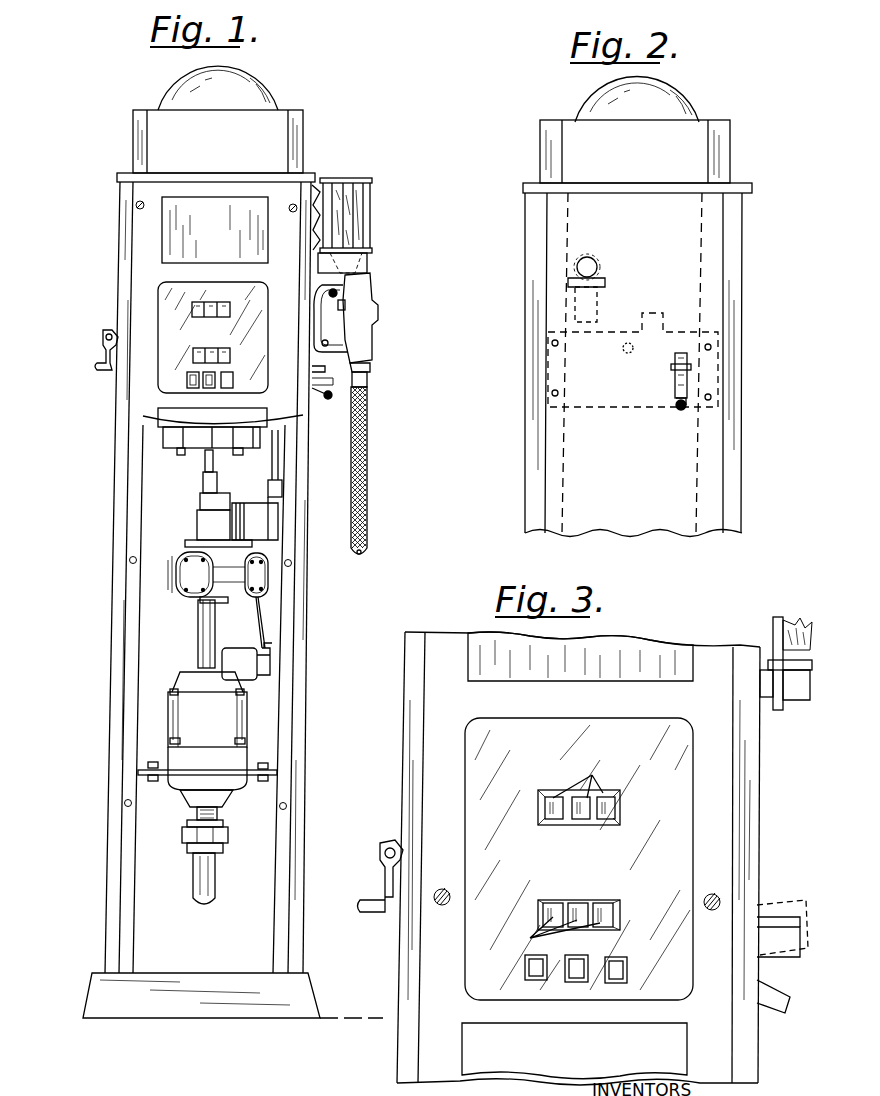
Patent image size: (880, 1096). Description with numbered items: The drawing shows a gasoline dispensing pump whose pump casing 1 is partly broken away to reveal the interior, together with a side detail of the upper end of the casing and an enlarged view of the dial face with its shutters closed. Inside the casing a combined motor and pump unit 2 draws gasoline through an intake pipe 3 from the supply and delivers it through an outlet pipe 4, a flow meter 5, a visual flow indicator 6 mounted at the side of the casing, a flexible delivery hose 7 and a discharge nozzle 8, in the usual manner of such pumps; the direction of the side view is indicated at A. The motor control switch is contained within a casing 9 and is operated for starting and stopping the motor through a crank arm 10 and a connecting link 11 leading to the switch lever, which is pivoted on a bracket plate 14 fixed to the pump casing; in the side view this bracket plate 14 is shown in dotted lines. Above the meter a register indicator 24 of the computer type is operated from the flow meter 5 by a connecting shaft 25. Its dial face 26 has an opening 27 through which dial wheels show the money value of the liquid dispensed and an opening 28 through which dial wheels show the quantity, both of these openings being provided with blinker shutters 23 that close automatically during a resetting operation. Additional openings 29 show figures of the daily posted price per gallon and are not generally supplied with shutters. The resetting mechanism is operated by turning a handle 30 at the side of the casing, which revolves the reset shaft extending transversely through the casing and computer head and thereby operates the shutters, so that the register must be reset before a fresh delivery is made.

In FIG. 1, the pump casing 1 is at (115, 500).
In FIG. 2, the pump casing 1 is at (548, 497).
In FIG. 3, the pump casing 1 is at (408, 980).
In FIG. 1, the combined motor and pump unit 2 is at (230, 748).
In FIG. 1, the intake pipe 3 is at (207, 885).
In FIG. 1, the outlet pipe 4 is at (200, 628).
In FIG. 1, the flow meter 5 is at (192, 565).
In FIG. 1, the visual flow indicator 6 is at (368, 218).
In FIG. 3, the visual flow indicator 6 is at (795, 623).
In FIG. 1, the flexible delivery hose 7 is at (367, 448).
In FIG. 1, the discharge nozzle 8 is at (358, 302).
In FIG. 1, the casing 9 is at (228, 652).
In FIG. 1, the crank arm 10 is at (263, 655).
In FIG. 1, the connecting link 11 is at (260, 612).
In FIG. 2, the bracket plate 14 is at (623, 408).
In FIG. 3, the blinker shutter 23 is at (578, 777).
In FIG. 1, the register indicator 24 is at (172, 440).
In FIG. 1, the connecting shaft 25 is at (205, 480).
In FIG. 1, the dial face 26 is at (170, 372).
In FIG. 3, the dial face 26 is at (478, 908).
In FIG. 1, the opening 27 is at (230, 310).
In FIG. 3, the opening 27 is at (620, 817).
In FIG. 1, the opening 28 is at (226, 348).
In FIG. 3, the opening 28 is at (620, 917).
In FIG. 1, the additional openings 29 is at (235, 387).
In FIG. 3, the additional openings 29 is at (627, 963).
In FIG. 1, the handle 30 is at (105, 352).
In FIG. 3, the handle 30 is at (381, 878).
In FIG. 1, the view direction arrow A is at (433, 336).